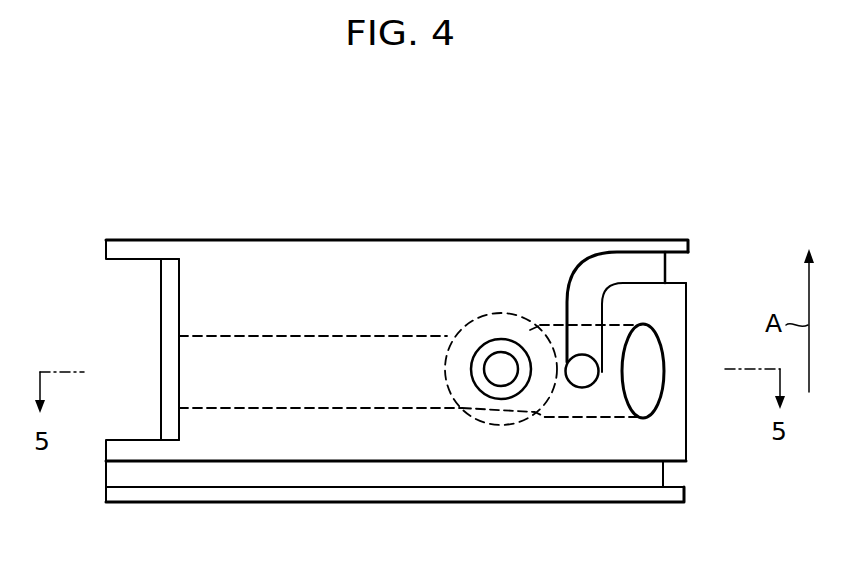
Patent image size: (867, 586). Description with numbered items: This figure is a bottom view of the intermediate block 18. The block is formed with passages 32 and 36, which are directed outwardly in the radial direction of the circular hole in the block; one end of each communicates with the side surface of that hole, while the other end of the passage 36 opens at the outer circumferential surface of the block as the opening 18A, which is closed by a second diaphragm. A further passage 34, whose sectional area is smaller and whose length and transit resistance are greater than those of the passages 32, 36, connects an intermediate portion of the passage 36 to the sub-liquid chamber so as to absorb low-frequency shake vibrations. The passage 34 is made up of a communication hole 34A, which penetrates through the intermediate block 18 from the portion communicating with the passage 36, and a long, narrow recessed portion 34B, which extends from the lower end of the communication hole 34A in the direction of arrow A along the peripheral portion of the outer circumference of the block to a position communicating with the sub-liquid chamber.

The intermediate block 18 is at (104, 241).
The opening 18A is at (656, 393).
The passage 32 is at (262, 337).
The passage 34 is at (628, 273).
The communication hole 34A is at (589, 386).
The recessed portion 34B is at (666, 281).
The passage 36 is at (557, 412).